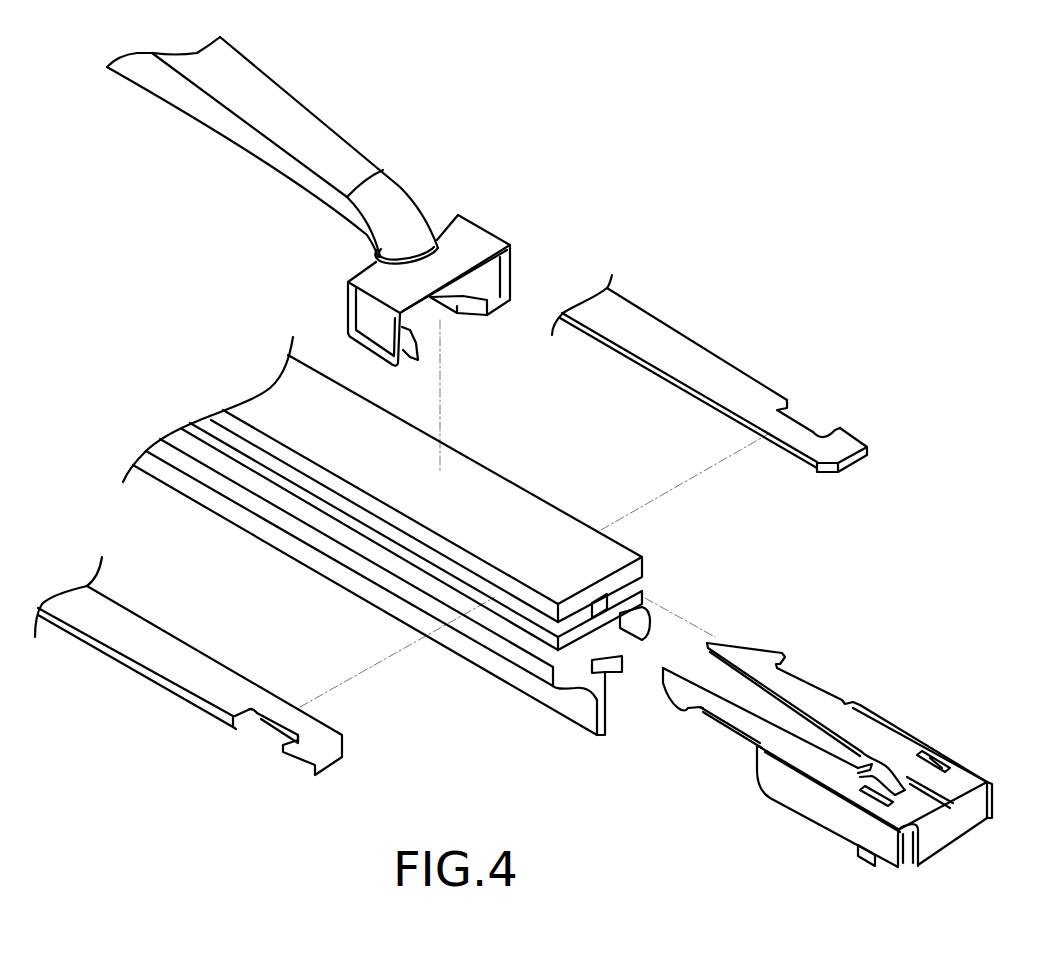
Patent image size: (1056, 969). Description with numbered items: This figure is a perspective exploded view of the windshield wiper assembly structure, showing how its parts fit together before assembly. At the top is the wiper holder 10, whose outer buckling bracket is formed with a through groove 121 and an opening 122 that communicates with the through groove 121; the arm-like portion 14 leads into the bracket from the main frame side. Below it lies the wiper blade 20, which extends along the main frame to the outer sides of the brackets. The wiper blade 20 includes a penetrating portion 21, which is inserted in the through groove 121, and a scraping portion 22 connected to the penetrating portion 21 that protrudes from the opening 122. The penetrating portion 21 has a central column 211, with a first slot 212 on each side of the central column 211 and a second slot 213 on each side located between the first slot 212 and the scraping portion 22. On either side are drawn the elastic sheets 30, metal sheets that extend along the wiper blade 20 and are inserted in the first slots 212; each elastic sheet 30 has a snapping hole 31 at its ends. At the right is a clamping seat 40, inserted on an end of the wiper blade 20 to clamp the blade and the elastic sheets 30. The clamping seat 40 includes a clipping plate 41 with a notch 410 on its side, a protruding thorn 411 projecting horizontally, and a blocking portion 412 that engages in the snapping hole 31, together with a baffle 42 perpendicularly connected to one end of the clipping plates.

The wiper holder 10 is at (352, 220).
The cable 14 is at (345, 152).
The through groove 121 is at (473, 298).
The opening 122 is at (448, 332).
The wiper blade 20 is at (465, 568).
The penetrating portion 21 is at (340, 497).
The central column 211 is at (603, 610).
The first slot 212 is at (527, 610).
The second slot 213 is at (583, 658).
The scraping portion 22 is at (596, 696).
The elastic sheet 30 is at (688, 353).
The snapping hole 31 is at (815, 420).
The clamping seat 40 is at (852, 728).
The clipping plate 41 is at (852, 710).
The notch 410 is at (810, 672).
The protruding thorn 411 is at (902, 768).
The blocking portion 412 is at (940, 765).
The baffle 42 is at (950, 835).